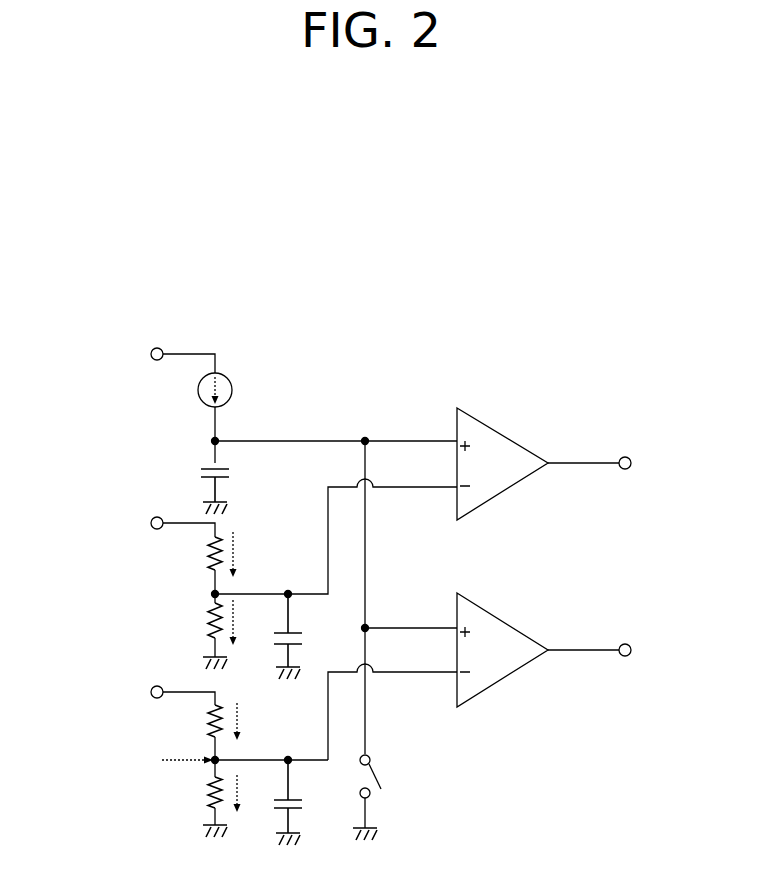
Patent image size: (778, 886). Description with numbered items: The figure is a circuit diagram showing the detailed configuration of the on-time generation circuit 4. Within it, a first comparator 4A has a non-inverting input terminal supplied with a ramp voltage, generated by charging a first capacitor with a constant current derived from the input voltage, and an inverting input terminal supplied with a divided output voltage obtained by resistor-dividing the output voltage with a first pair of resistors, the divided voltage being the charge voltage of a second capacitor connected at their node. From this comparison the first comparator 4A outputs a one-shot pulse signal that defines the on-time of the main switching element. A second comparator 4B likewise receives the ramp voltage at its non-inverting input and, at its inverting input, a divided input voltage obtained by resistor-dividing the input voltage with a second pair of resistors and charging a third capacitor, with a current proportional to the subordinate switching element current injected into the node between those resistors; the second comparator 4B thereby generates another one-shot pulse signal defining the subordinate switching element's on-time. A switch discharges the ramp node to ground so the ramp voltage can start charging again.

The on-time generation circuit 4 is at (471, 256).
The first comparator 4A is at (505, 453).
The second comparator 4B is at (505, 657).